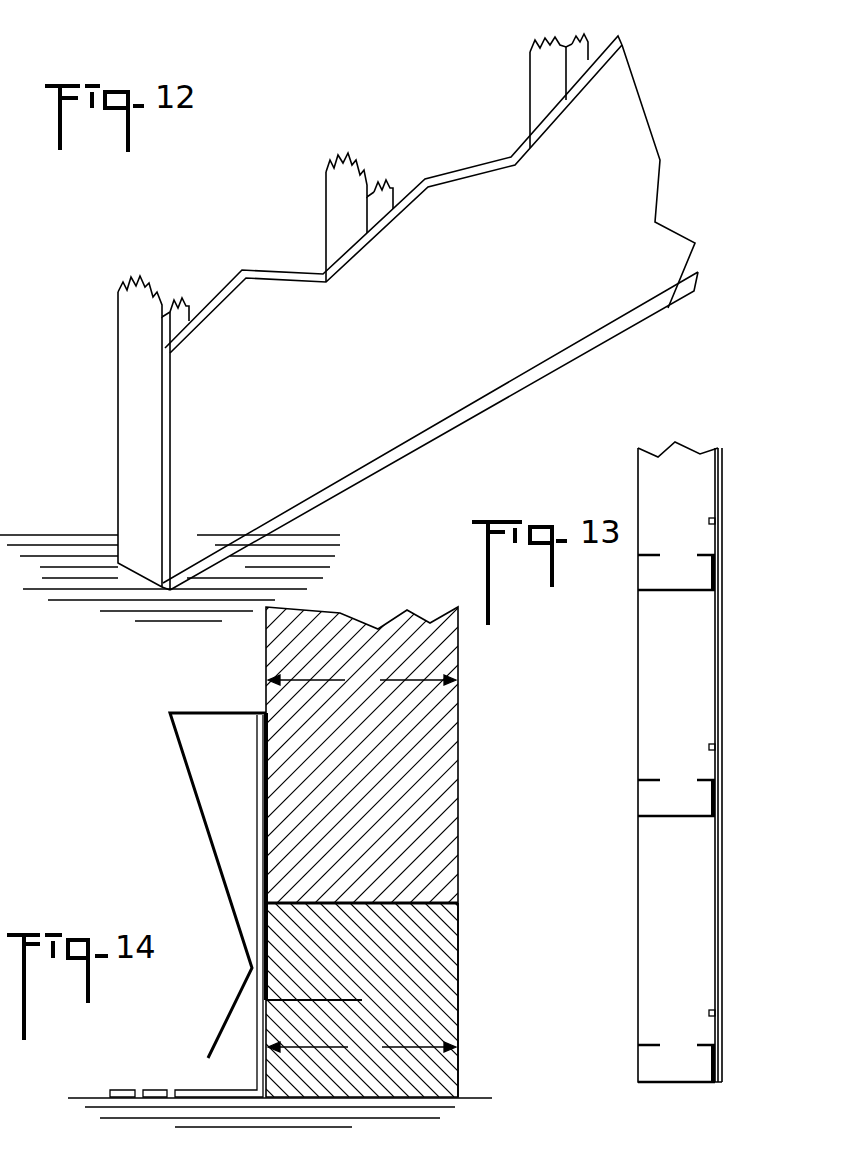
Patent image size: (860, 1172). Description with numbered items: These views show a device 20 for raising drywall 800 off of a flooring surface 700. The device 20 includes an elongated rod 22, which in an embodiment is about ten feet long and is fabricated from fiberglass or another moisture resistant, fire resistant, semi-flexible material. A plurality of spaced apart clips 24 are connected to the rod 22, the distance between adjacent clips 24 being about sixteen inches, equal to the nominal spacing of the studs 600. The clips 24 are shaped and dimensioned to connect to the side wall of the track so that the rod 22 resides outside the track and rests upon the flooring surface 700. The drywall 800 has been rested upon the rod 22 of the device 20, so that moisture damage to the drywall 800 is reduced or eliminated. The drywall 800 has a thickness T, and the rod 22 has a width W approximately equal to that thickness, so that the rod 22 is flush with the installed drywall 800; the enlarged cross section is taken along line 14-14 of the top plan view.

In FIG. 12, the device 20 is at (642, 337).
In FIG. 13, the device 20 is at (731, 440).
In FIG. 14, the device 20 is at (170, 893).
In FIG. 12, the elongated rod 22 is at (468, 418).
In FIG. 14, the elongated rod 22 is at (460, 1003).
In FIG. 13, the clip 24 is at (718, 522).
In FIG. 14, the clip 24 is at (158, 735).
In FIG. 12, the stud 600 is at (322, 218).
In FIG. 13, the stud 600 is at (650, 592).
In FIG. 12, the flooring surface 700 is at (127, 620).
In FIG. 14, the flooring surface 700 is at (442, 1108).
In FIG. 12, the drywall 800 is at (430, 194).
In FIG. 13, the drywall 800 is at (720, 922).
In FIG. 14, the drywall 800 is at (415, 658).
In FIG. 13, the section line for FIG. 14 is at (740, 747).